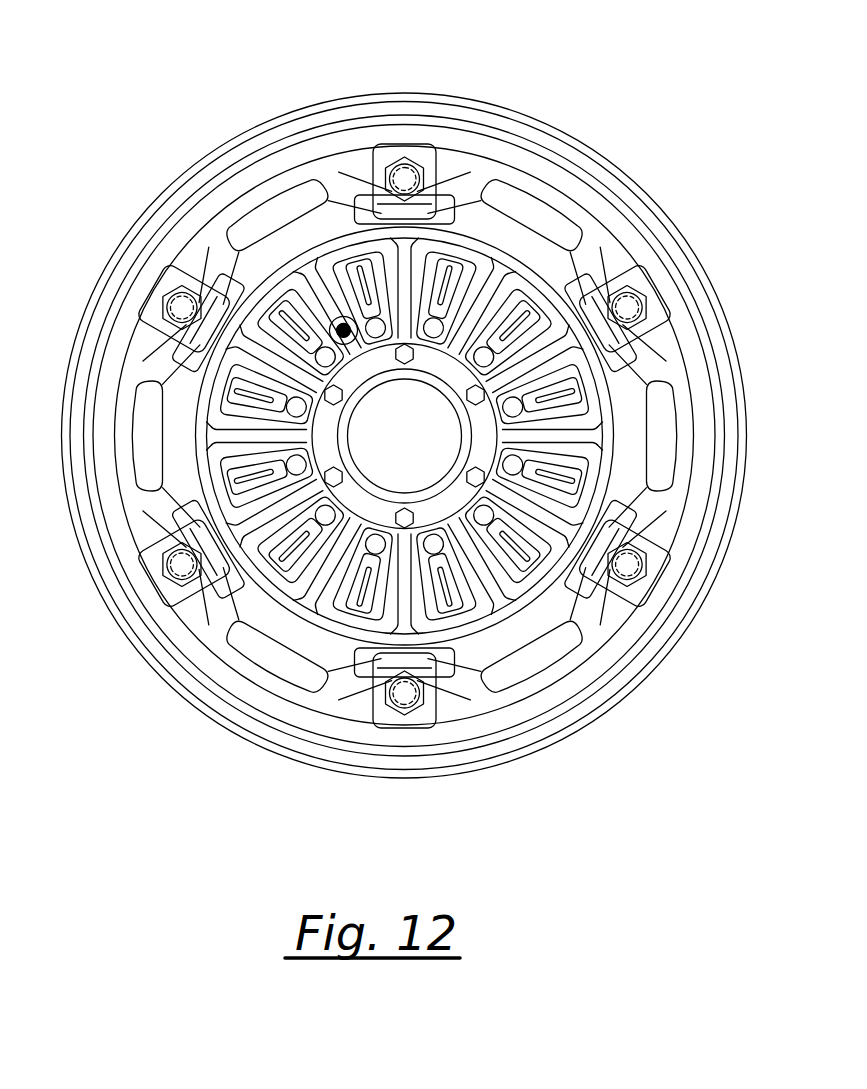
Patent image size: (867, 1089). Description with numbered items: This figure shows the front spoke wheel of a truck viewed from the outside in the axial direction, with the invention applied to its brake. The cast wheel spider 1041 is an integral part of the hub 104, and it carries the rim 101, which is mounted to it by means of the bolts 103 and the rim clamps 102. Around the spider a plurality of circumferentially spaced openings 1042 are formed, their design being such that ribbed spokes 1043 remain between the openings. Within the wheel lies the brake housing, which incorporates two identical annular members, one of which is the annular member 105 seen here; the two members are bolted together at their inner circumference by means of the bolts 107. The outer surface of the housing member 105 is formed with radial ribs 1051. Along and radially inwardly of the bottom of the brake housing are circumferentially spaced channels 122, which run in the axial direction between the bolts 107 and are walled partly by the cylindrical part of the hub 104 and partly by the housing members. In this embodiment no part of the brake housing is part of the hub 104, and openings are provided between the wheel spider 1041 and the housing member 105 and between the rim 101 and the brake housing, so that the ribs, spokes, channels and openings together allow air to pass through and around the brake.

The rim 101 is at (408, 103).
The rim clamps 102 is at (637, 277).
The bolts 103 is at (188, 300).
The hub 104 is at (500, 610).
The wheel spider 1041 is at (347, 665).
The openings 1042 is at (455, 597).
The ribbed spokes 1043 is at (530, 510).
The annular member 105 is at (463, 275).
The radial ribs 1051 is at (303, 300).
The bolts 107 is at (346, 317).
The channels 122 is at (325, 357).